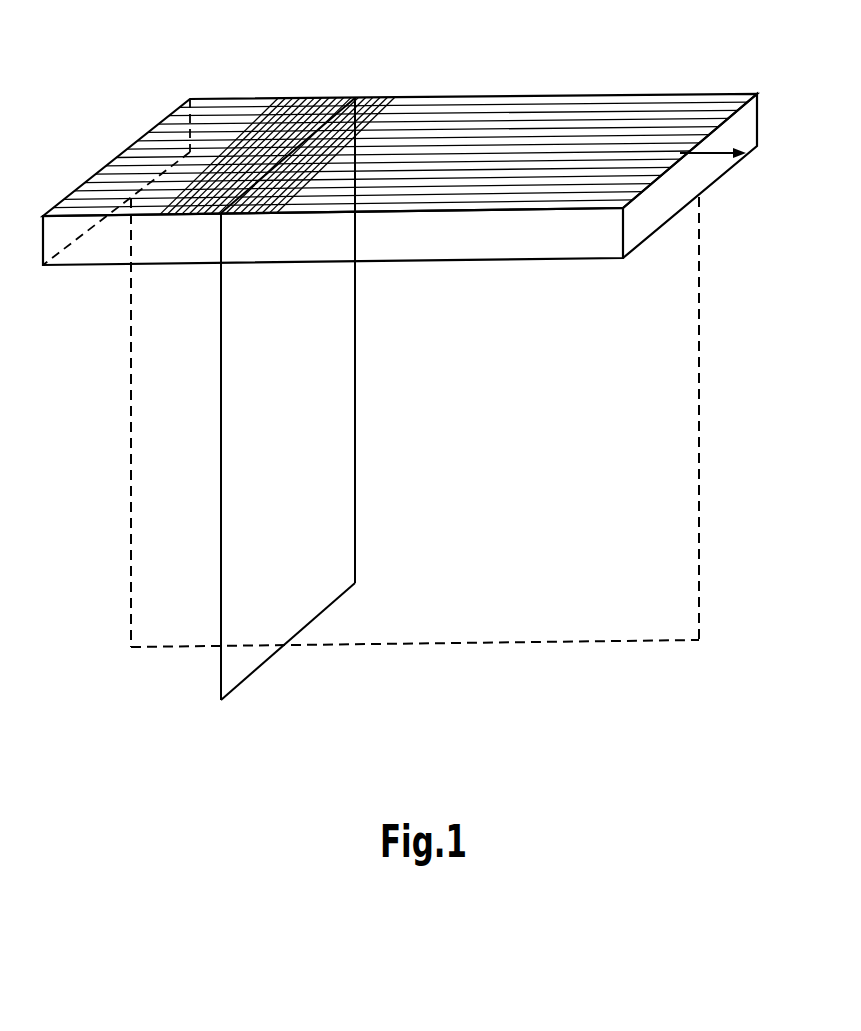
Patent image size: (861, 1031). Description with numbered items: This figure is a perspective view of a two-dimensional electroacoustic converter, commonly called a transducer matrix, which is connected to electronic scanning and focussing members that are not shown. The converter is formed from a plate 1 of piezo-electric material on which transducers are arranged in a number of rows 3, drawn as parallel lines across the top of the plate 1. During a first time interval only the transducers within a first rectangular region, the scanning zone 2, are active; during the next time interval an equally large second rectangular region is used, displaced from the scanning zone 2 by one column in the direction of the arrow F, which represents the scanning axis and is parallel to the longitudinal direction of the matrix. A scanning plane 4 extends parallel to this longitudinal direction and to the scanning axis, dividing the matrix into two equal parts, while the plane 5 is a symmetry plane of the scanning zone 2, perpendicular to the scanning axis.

The plate 1 is at (650, 217).
The scanning zone 2 is at (312, 97).
The rows 3 is at (710, 115).
The scanning plane 4 is at (670, 525).
The symmetry plane 5 is at (241, 389).
The arrow F is at (713, 144).